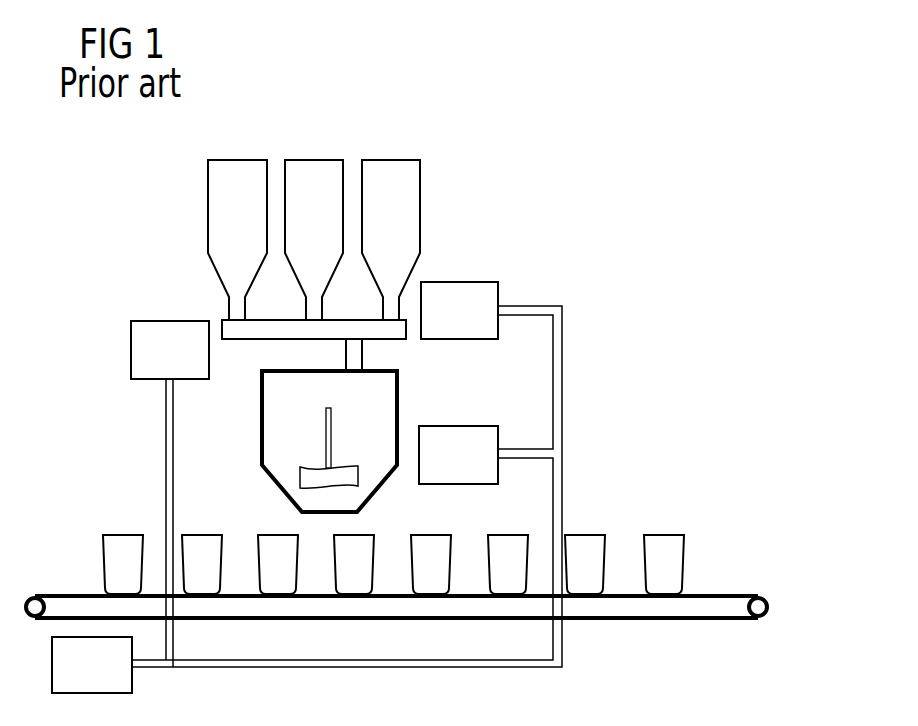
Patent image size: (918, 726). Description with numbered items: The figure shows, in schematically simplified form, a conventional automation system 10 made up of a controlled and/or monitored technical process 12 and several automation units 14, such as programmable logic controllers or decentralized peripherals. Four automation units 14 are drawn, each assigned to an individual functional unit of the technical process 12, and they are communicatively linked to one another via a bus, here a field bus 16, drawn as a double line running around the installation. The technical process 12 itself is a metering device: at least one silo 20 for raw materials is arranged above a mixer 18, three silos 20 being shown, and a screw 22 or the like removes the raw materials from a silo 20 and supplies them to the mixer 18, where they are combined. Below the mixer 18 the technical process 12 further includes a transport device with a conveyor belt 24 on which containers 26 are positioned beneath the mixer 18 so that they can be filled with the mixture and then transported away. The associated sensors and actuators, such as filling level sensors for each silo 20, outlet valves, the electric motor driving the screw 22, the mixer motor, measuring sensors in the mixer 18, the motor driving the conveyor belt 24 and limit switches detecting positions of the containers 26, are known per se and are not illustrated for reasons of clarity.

The automation system 10 is at (645, 259).
The technical process 12 is at (163, 233).
The automation unit 14 is at (166, 321).
The field bus 16 is at (562, 368).
The mixer 18 is at (262, 455).
The silo 20 is at (239, 160).
The screw 22 is at (250, 340).
The conveyor belt 24 is at (620, 620).
The container 26 is at (103, 557).